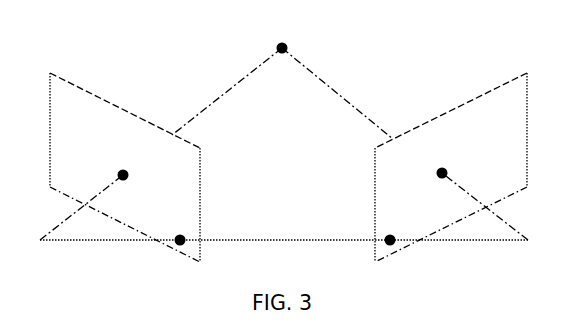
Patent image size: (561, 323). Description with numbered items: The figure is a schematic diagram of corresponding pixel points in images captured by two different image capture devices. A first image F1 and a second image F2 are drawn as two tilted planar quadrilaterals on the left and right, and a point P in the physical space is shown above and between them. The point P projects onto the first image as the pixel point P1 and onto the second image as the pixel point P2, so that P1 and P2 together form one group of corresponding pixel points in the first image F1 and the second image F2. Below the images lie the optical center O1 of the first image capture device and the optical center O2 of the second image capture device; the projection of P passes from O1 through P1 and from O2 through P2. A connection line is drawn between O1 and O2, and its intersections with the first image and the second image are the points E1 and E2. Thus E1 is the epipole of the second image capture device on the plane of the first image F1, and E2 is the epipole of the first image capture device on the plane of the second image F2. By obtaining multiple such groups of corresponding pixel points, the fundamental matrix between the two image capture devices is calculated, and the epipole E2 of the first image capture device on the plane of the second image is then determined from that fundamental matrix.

The point in a physical space P is at (282, 77).
The corresponding pixel point in the first image P1 is at (125, 190).
The corresponding pixel point in the second image P2 is at (448, 189).
The first image F1 is at (125, 167).
The second image F2 is at (451, 167).
The optical center of the first image capture device O1 is at (104, 218).
The optical center of the second image capture device O2 is at (465, 219).
The epipole of the second image capture device on the plane of the first image E1 is at (181, 230).
The epipole of the first image capture device on the plane of the second image E2 is at (393, 230).